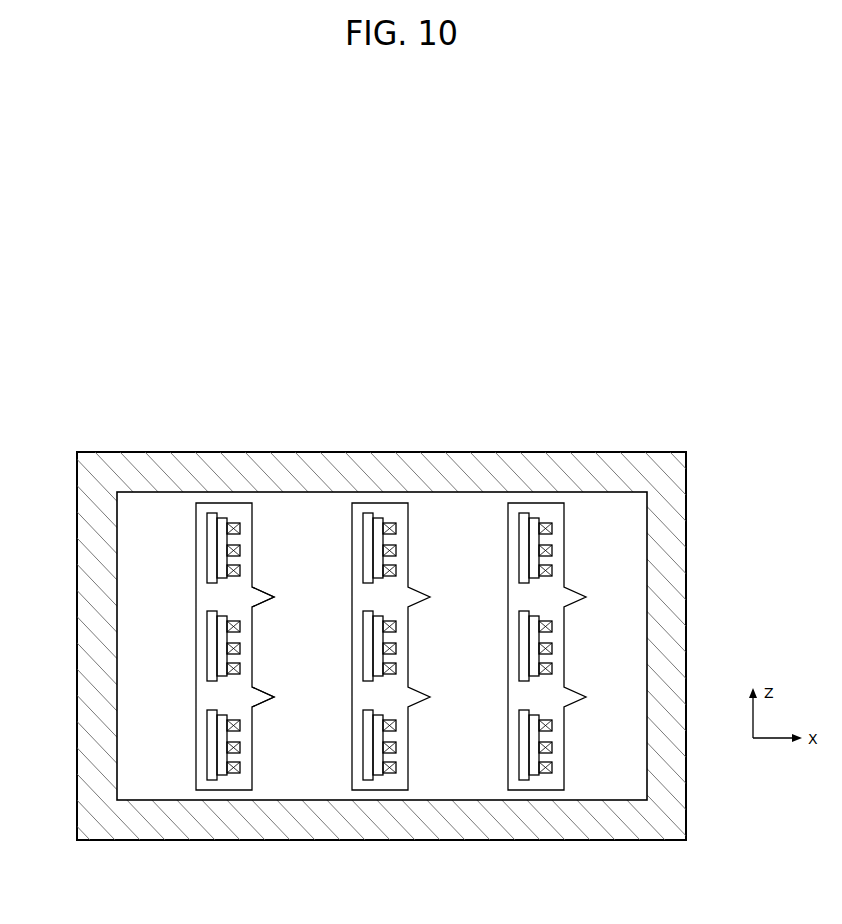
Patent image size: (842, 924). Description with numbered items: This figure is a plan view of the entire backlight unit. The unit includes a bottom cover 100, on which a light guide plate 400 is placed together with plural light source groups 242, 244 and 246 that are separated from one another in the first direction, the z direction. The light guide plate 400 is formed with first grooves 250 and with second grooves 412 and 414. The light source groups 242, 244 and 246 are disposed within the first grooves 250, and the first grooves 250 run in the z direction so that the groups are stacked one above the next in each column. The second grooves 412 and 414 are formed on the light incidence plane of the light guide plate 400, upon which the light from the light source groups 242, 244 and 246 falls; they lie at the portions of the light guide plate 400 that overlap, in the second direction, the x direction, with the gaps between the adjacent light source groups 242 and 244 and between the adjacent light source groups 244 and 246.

The bottom cover 100 is at (678, 636).
The light guide plate 400 is at (635, 562).
The first grooves 250 is at (202, 778).
The second groove 414 is at (273, 597).
The second groove 412 is at (258, 700).
The light source group 246 is at (200, 551).
The light source group 244 is at (200, 650).
The light source group 242 is at (200, 749).